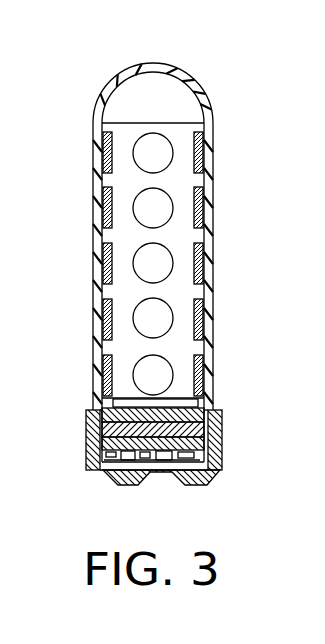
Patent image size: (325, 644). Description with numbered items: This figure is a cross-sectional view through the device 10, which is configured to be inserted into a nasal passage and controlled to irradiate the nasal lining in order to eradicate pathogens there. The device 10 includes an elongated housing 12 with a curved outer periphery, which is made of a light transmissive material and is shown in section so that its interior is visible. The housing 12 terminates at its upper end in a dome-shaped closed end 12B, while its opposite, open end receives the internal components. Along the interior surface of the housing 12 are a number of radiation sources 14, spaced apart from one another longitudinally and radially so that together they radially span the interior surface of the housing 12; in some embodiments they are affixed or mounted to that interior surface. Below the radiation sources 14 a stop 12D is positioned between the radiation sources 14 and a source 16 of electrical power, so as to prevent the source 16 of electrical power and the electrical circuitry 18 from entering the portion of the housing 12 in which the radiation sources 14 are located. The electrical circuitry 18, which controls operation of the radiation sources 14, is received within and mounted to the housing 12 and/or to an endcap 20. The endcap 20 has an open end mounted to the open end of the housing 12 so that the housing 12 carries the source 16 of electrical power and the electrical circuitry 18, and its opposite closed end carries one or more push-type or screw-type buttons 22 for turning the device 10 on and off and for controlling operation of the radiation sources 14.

The device 10 is at (143, 263).
The housing 12 is at (213, 158).
The dome-shaped closed end 12B is at (148, 64).
The stop 12D is at (116, 403).
The radiation sources 14 is at (127, 268).
The source of electrical power 16 is at (182, 430).
The electrical circuitry 18 is at (105, 455).
The endcap 20 is at (88, 438).
The buttons 22 is at (185, 484).